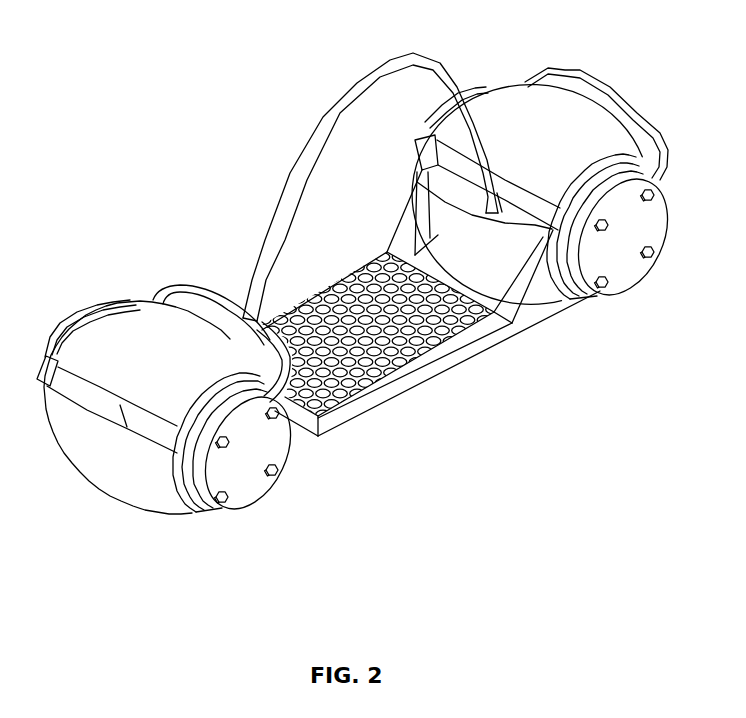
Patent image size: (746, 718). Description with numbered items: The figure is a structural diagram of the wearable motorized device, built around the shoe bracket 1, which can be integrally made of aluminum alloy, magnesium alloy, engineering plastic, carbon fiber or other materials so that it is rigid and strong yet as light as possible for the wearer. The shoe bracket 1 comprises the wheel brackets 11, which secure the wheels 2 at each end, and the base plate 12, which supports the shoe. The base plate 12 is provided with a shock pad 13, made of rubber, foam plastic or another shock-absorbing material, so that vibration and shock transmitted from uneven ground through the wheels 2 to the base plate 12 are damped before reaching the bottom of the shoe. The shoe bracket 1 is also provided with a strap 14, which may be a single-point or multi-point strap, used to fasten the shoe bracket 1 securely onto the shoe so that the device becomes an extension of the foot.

The shoe bracket 1 is at (513, 478).
The wheels 2 is at (515, 118).
The wheel brackets 11 is at (553, 293).
The base plate 12 is at (397, 397).
The shock pad 13 is at (433, 332).
The strap 14 is at (313, 143).